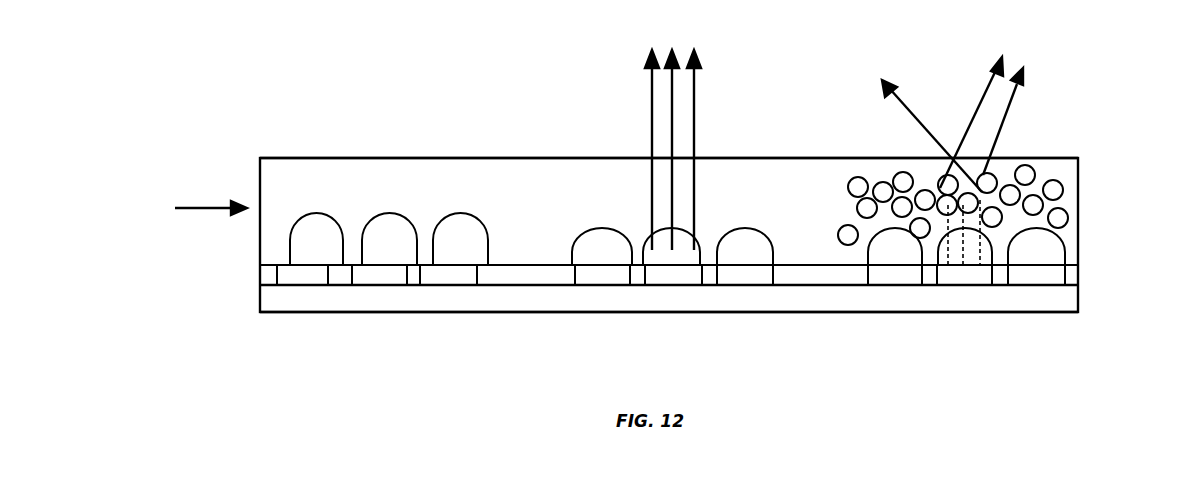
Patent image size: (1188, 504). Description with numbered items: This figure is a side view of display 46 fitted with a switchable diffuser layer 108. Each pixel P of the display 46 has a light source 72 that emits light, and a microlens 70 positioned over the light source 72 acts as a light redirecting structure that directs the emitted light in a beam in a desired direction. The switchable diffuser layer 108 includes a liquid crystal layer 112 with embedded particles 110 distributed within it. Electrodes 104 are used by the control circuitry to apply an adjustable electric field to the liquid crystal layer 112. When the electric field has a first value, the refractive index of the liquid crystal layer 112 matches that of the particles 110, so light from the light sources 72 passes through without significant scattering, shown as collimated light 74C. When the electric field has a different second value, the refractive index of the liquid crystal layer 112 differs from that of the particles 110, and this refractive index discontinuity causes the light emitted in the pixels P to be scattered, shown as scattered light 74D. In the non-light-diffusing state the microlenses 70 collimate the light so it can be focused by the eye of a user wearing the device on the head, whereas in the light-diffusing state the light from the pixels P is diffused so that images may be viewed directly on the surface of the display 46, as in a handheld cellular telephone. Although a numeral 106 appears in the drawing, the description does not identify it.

The display 46 is at (1105, 282).
The microlens 70 is at (462, 222).
The light source 72 is at (315, 278).
The collimated light 74C is at (673, 103).
The scattered light 74D is at (913, 115).
The electrodes 104 is at (358, 157).
The encapsulation layer 106 is at (266, 178).
The switchable diffuser layer 108 is at (193, 211).
The embedded particles 110 is at (883, 182).
The liquid crystal layer 112 is at (560, 200).
The pixel P is at (1035, 293).